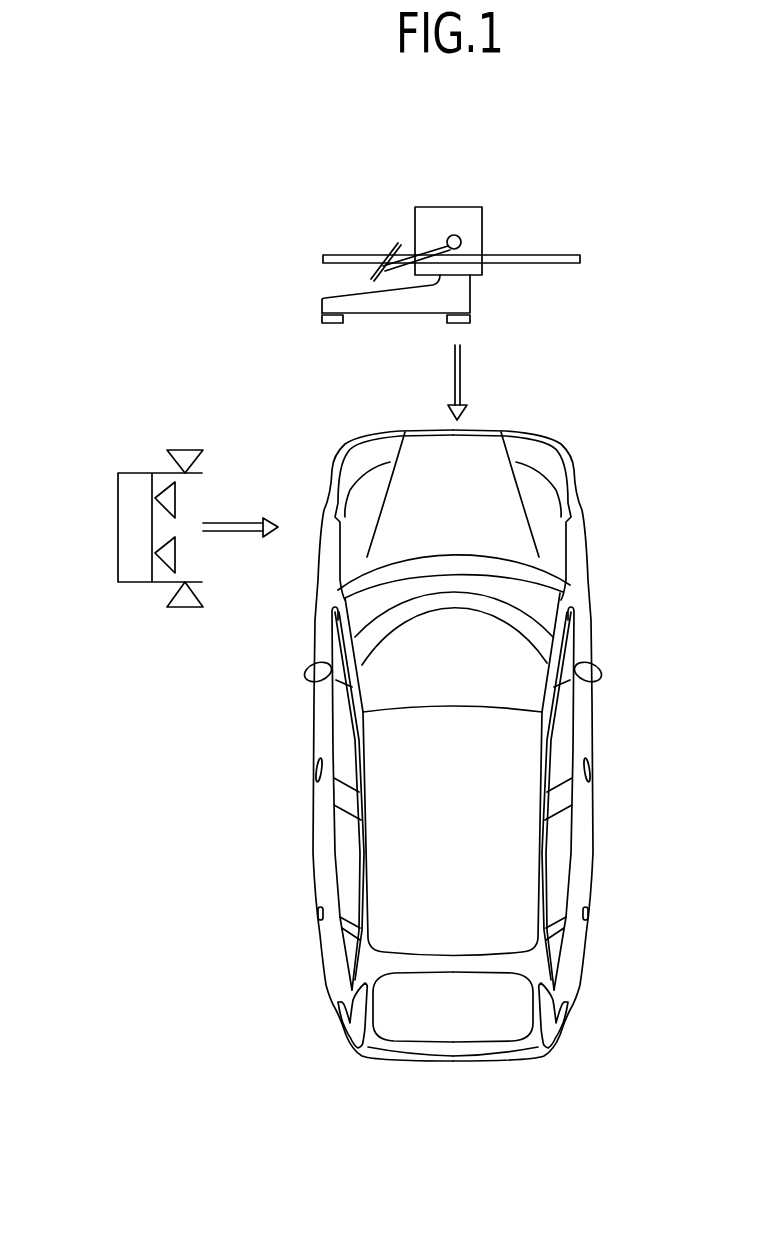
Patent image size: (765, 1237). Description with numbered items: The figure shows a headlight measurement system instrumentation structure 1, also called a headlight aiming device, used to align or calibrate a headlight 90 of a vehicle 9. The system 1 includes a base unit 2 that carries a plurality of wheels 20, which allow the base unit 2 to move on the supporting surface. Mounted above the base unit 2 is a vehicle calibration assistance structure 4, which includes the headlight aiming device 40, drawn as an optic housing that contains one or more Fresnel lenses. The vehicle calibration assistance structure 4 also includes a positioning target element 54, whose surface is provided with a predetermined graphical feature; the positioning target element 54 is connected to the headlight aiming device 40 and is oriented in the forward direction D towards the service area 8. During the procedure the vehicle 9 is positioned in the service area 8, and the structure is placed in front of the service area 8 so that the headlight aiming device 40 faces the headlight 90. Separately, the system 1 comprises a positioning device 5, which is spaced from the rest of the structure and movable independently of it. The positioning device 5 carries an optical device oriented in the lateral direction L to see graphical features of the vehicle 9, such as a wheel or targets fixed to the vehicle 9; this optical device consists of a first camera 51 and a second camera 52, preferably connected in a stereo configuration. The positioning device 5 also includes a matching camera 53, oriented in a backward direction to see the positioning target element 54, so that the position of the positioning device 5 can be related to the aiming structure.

The headlight measurement system instrumentation structure 1 is at (207, 287).
The base unit 2 is at (399, 329).
The wheels 20 is at (470, 319).
The vehicle calibration assistance structure 4 is at (455, 202).
The headlight aiming device 40 is at (463, 218).
The positioning target element 54 is at (398, 243).
The positioning device 5 is at (156, 518).
The first camera 51 is at (168, 495).
The second camera 52 is at (168, 553).
The matching camera 53 is at (187, 457).
The service area 8 is at (487, 727).
The vehicle 9 is at (500, 843).
The headlight 90 is at (360, 460).
The forward direction D is at (460, 380).
The lateral direction L is at (242, 523).